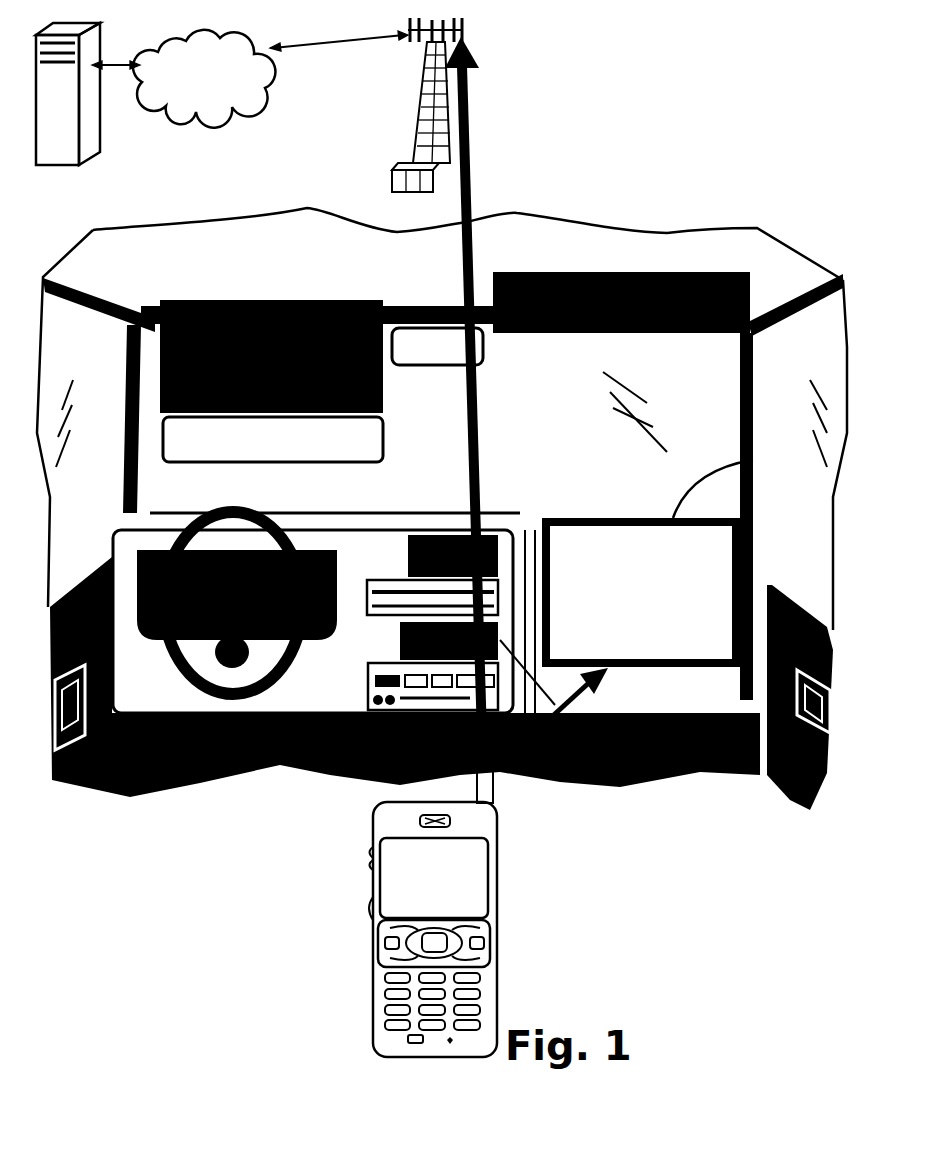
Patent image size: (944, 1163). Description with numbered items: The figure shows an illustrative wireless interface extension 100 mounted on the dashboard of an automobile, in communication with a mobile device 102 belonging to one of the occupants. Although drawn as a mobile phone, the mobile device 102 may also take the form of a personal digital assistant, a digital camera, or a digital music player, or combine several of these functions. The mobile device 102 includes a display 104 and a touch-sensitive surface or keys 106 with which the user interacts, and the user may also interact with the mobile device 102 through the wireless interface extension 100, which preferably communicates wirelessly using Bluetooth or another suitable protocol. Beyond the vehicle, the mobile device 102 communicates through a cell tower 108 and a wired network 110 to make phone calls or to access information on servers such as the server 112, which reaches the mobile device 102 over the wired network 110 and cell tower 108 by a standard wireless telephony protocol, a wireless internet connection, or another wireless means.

The wireless interface extension 100 is at (720, 585).
The mobile device 102 is at (381, 936).
The display 104 is at (395, 868).
The keys 106 is at (437, 1058).
The cell tower 108 is at (403, 195).
The wired network 110 is at (204, 112).
The server 112 is at (62, 165).